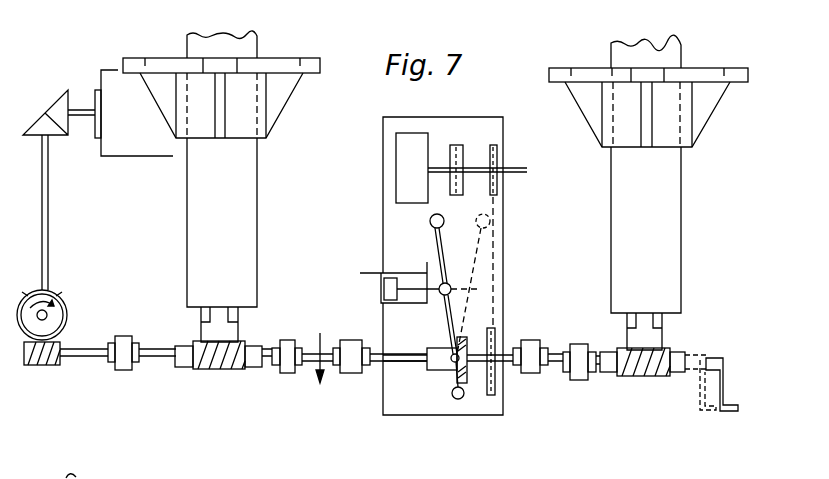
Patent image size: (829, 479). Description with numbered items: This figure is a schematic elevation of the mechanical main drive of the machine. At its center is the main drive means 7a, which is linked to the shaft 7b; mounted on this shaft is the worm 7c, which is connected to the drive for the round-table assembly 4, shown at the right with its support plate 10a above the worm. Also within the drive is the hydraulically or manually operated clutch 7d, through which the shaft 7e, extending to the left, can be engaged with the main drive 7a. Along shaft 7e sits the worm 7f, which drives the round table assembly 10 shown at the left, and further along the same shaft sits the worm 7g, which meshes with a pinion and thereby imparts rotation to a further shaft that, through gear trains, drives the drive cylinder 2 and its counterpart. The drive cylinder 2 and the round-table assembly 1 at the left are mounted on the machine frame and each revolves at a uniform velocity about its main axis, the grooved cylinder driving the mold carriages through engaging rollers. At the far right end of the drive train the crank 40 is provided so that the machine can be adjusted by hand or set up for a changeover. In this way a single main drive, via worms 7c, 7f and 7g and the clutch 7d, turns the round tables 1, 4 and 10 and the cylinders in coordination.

The round-table assembly 1 is at (104, 46).
The round table assembly 10 is at (162, 60).
The drive cylinder 2 is at (120, 143).
The round-table assembly 4 is at (749, 75).
The support plate 10a is at (703, 76).
The main drive means 7a is at (405, 170).
The shaft 7b is at (507, 363).
The worm 7c is at (640, 377).
The clutch 7d is at (442, 378).
The shaft 7e is at (410, 360).
The worm 7f is at (228, 370).
The worm 7g is at (45, 366).
The crank 40 is at (716, 362).